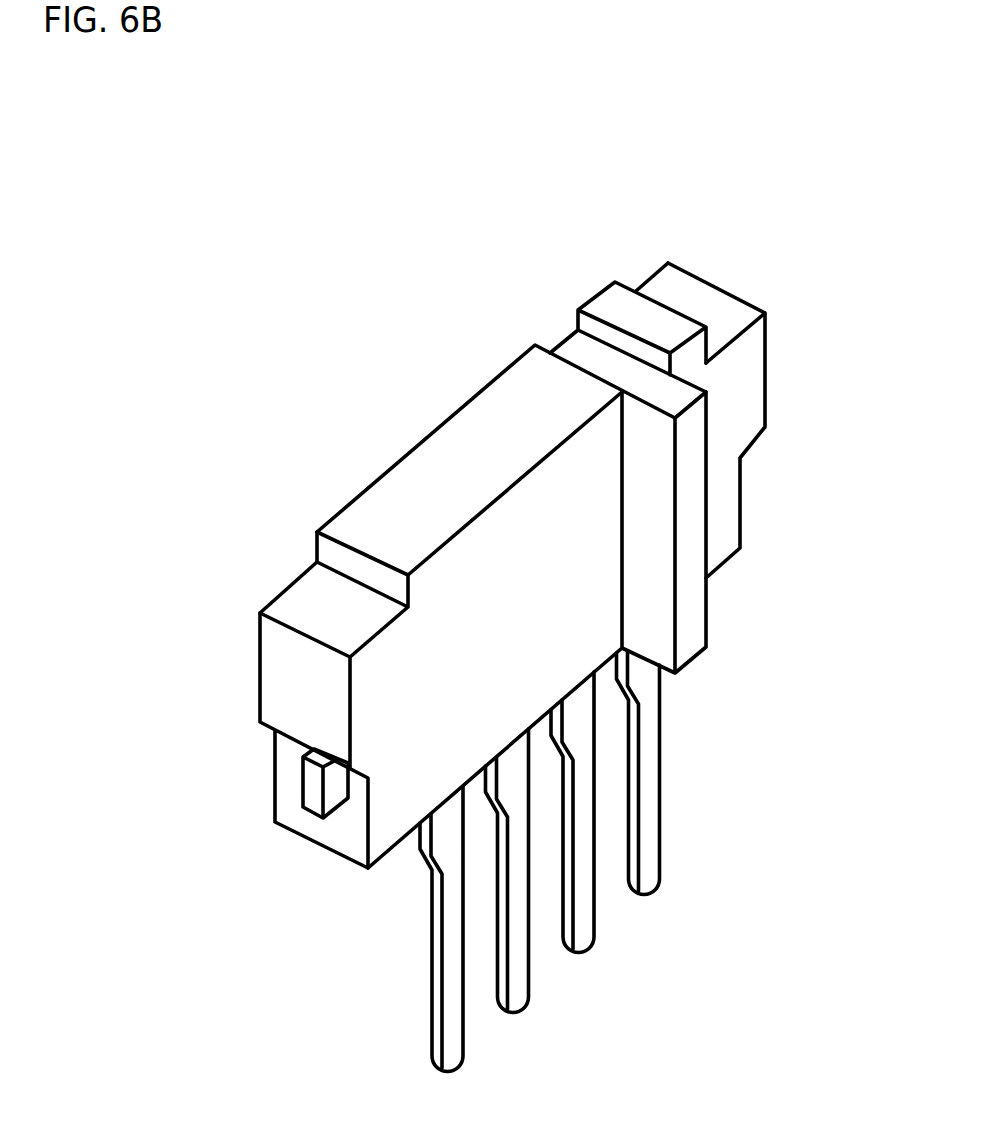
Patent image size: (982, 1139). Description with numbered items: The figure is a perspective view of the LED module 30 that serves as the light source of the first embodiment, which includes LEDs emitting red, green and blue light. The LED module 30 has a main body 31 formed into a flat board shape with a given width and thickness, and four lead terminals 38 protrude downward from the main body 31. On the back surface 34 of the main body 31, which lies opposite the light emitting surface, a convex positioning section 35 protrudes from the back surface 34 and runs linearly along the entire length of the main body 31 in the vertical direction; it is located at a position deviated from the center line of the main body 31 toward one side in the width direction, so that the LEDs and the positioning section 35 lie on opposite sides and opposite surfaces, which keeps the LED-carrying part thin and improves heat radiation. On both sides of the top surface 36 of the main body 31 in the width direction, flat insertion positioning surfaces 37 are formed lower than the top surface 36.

The LED module 30 is at (244, 293).
The main body 31 is at (315, 843).
The back surface 34 is at (557, 635).
The positioning section 35 is at (693, 533).
The top surface 36 is at (452, 440).
The insertion positioning surfaces 37 is at (300, 602).
The lead terminals 38 is at (428, 982).